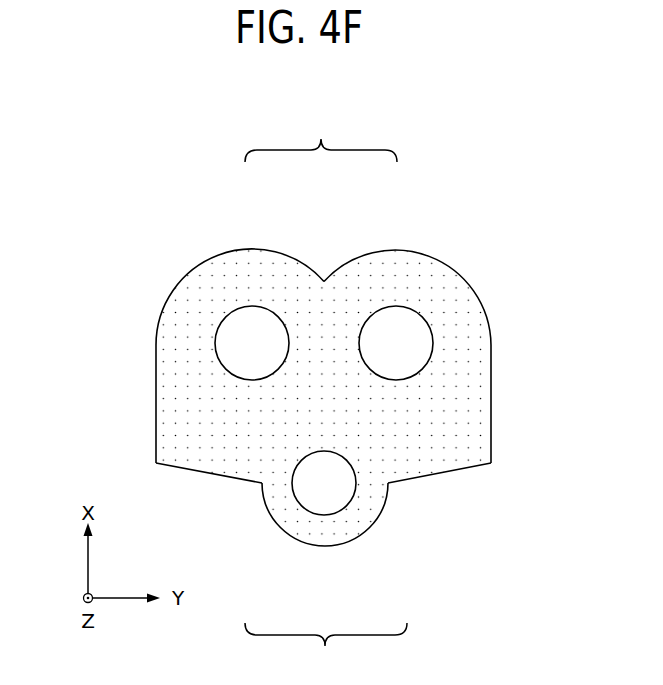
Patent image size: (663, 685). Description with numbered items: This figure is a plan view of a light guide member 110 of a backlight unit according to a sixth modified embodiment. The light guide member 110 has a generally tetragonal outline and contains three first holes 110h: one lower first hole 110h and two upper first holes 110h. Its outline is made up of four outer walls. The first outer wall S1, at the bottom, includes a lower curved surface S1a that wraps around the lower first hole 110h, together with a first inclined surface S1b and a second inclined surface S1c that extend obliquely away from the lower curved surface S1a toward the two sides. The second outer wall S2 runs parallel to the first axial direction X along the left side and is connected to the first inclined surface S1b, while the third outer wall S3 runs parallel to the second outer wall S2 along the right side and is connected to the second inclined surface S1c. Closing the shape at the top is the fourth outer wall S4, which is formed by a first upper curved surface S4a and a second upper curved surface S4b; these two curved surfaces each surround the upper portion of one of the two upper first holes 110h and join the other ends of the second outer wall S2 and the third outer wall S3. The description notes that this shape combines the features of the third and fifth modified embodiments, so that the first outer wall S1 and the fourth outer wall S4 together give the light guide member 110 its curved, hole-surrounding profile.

The light guide member 110 is at (117, 305).
The first hole 110h is at (220, 313).
The first outer wall S1 is at (326, 648).
The lower curved surface S1a is at (328, 546).
The first inclined surface S1b is at (207, 475).
The second inclined surface S1c is at (440, 475).
The second outer wall S2 is at (156, 388).
The third outer wall S3 is at (492, 375).
The fourth outer wall S4 is at (321, 136).
The first upper curved surface S4a is at (252, 247).
The second upper curved surface S4b is at (395, 247).